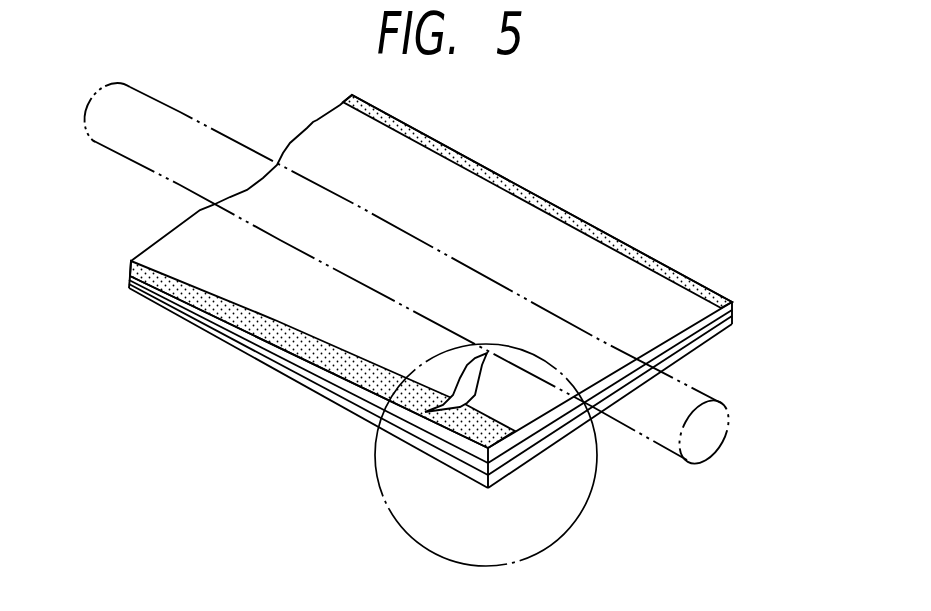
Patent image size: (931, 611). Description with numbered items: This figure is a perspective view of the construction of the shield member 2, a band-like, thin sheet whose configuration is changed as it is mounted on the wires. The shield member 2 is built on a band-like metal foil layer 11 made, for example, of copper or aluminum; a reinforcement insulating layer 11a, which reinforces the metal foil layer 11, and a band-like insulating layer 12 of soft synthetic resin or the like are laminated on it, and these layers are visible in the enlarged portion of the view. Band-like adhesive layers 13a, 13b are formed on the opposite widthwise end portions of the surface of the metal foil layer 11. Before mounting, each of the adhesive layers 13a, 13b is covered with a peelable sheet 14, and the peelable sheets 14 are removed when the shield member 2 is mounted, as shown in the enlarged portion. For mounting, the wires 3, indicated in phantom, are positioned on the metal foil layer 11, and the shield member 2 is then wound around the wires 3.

The shield member 2 is at (430, 317).
The wires 3 is at (454, 277).
The metal foil layer 11 is at (440, 435).
The reinforcement insulating layer 11a is at (468, 460).
The insulating layer 12 is at (545, 447).
The adhesive layer 13a is at (320, 373).
The adhesive layer 13b is at (612, 240).
The peelable sheet 14 is at (479, 380).